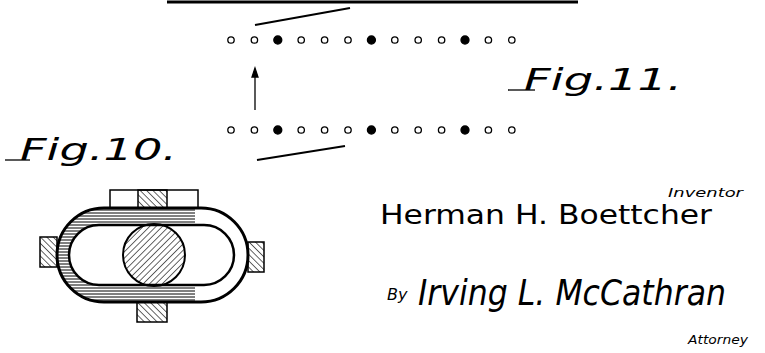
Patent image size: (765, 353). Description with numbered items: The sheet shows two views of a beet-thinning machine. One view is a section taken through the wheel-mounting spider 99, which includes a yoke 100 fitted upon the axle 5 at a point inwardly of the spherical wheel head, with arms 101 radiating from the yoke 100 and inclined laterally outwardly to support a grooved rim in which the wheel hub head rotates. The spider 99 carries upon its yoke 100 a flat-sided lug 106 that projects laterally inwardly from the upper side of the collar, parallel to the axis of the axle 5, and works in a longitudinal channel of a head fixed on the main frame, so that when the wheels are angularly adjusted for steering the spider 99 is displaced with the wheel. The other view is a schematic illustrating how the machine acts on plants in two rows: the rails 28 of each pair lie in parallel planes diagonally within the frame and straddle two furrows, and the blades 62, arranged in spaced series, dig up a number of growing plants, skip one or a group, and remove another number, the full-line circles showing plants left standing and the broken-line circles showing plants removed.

In FIG. 10, the axle 5 is at (177, 260).
In FIG. 11, the rails 28 is at (318, 13).
In FIG. 11, the blades 62 is at (262, 48).
In FIG. 10, the spider 99 is at (267, 260).
In FIG. 10, the yoke 100 is at (225, 287).
In FIG. 10, the arms 101 is at (257, 242).
In FIG. 10, the lug 106 is at (185, 197).